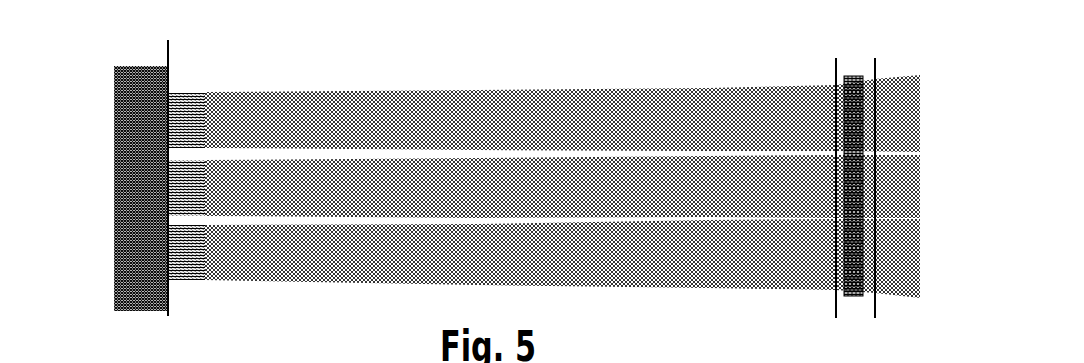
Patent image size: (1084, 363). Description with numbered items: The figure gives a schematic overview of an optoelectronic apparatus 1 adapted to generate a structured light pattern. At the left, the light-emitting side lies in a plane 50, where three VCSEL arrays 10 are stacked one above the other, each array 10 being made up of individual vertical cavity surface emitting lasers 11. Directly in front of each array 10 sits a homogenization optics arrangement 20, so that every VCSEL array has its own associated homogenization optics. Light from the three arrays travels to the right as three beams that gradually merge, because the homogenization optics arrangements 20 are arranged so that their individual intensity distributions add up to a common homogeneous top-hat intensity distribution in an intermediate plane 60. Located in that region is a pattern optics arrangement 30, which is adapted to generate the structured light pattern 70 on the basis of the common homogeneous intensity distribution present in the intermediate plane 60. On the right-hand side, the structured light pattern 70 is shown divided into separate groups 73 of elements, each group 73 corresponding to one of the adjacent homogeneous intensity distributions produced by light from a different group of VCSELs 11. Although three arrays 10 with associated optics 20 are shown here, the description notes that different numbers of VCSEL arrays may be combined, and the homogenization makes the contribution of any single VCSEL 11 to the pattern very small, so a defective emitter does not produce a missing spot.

The optoelectronic apparatus 1 is at (517, 174).
The VCSEL array 10 is at (100, 85).
The vertical cavity surface emitting laser 11 is at (161, 80).
The homogenization optics arrangement 20 is at (196, 85).
The pattern optics arrangement 30 is at (842, 68).
The plane 50 is at (160, 35).
The intermediate plane 60 is at (828, 53).
The structured light pattern 70 is at (868, 52).
The groups of elements 73 is at (917, 220).